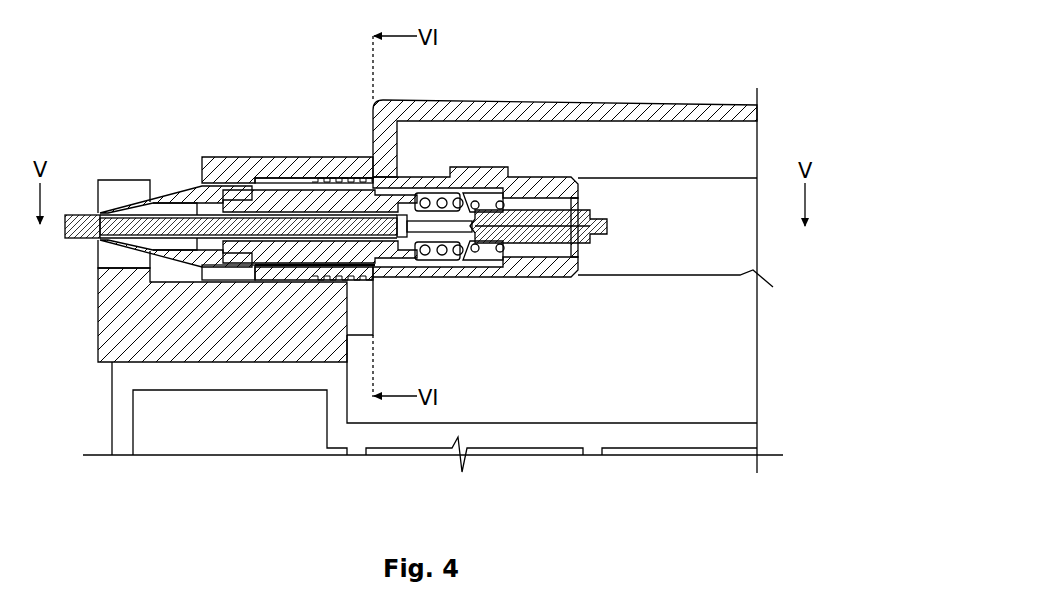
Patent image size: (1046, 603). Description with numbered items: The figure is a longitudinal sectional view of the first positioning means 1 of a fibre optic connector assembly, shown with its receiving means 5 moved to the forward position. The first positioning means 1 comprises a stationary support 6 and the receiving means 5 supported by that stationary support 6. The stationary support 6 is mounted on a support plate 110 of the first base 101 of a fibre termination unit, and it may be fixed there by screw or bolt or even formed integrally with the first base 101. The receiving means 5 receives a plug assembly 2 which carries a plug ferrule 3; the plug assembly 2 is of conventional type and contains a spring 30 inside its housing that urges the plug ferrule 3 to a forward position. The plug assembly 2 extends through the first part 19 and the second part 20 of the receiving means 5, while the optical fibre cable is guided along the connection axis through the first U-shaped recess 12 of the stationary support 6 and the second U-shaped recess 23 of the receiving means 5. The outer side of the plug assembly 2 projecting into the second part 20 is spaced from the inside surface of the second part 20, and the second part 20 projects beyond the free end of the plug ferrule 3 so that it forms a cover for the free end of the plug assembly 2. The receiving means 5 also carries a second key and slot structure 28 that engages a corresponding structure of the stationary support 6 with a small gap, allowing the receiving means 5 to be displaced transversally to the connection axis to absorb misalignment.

The first positioning means 1 is at (116, 123).
The plug assembly 2 is at (485, 293).
The plug ferrule 3 is at (610, 207).
The receiving means 5 is at (335, 140).
The stationary support 6 is at (90, 320).
The first U-shaped recess 12 is at (120, 193).
The first part 19 is at (221, 178).
The second part 20 is at (583, 110).
The second U-shaped recess 23 is at (203, 187).
The second key and slot structure 28 is at (387, 317).
The spring 30 is at (438, 193).
The first base 101 is at (658, 418).
The support plate 110 is at (123, 384).